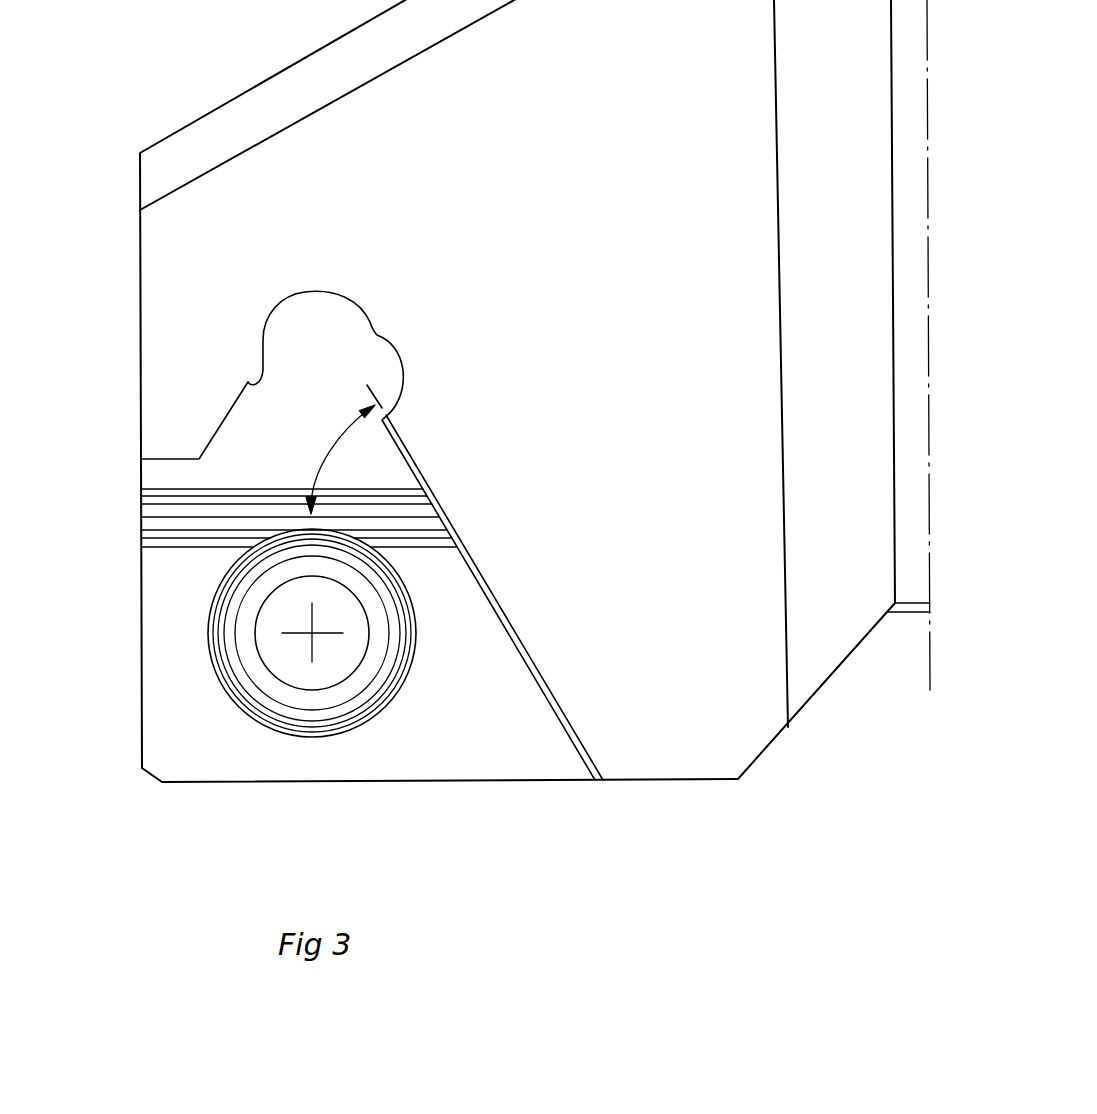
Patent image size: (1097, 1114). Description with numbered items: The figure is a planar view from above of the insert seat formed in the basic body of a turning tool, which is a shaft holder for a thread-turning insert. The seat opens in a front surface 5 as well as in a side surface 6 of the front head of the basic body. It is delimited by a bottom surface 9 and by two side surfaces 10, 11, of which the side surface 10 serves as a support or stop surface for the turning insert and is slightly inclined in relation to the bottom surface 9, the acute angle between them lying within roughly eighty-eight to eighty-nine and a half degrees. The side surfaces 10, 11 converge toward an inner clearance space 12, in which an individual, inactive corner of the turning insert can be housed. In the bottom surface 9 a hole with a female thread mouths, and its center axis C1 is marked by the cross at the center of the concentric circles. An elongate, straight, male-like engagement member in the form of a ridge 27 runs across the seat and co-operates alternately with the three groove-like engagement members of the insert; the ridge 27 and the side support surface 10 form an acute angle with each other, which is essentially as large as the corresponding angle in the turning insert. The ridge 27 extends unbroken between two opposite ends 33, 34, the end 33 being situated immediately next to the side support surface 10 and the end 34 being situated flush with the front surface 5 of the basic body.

The front surface 5 is at (139, 388).
The side surface 6 is at (390, 783).
The bottom surface 9 is at (497, 752).
The side surface 10 is at (490, 613).
The side surface 11 is at (252, 384).
The inner clearance space 12 is at (328, 318).
The engagement member 27 is at (278, 489).
The end 33 is at (428, 498).
The end 34 is at (140, 516).
The center axis C1 is at (312, 633).